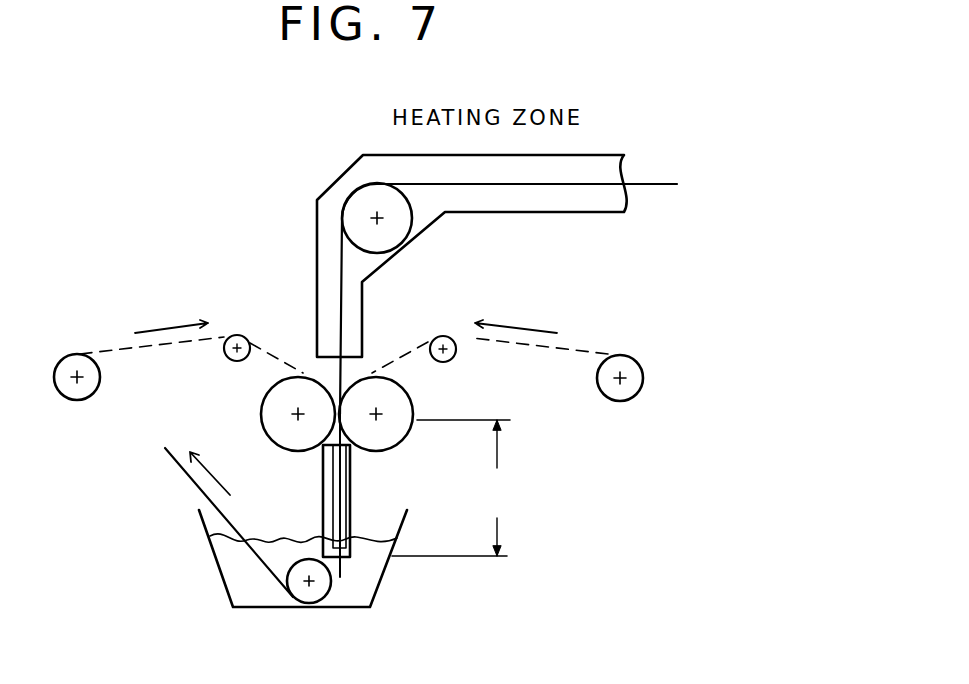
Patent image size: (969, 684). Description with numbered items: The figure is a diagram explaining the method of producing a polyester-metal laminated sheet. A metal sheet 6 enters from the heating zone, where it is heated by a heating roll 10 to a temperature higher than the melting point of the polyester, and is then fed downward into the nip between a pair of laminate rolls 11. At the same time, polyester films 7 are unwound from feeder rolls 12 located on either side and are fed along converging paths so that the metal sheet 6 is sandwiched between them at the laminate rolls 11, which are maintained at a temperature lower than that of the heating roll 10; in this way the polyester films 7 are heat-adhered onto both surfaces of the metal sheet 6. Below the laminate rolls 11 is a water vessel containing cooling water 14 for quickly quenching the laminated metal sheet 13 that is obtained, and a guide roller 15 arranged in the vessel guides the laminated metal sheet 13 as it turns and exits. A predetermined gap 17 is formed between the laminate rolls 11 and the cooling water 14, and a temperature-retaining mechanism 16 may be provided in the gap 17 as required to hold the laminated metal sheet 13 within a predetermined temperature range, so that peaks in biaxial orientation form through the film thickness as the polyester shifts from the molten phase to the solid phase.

The metal sheet 6 is at (648, 184).
The polyester film 7 is at (118, 348).
The heating roll 10 is at (412, 224).
The laminate roll 11 is at (262, 407).
The feeder roll 12 is at (60, 396).
The laminated metal sheet 13 is at (333, 562).
The cooling water 14 is at (368, 575).
The guide roller 15 is at (327, 598).
The temperature-retaining mechanism 16 is at (352, 475).
The gap 17 is at (453, 488).